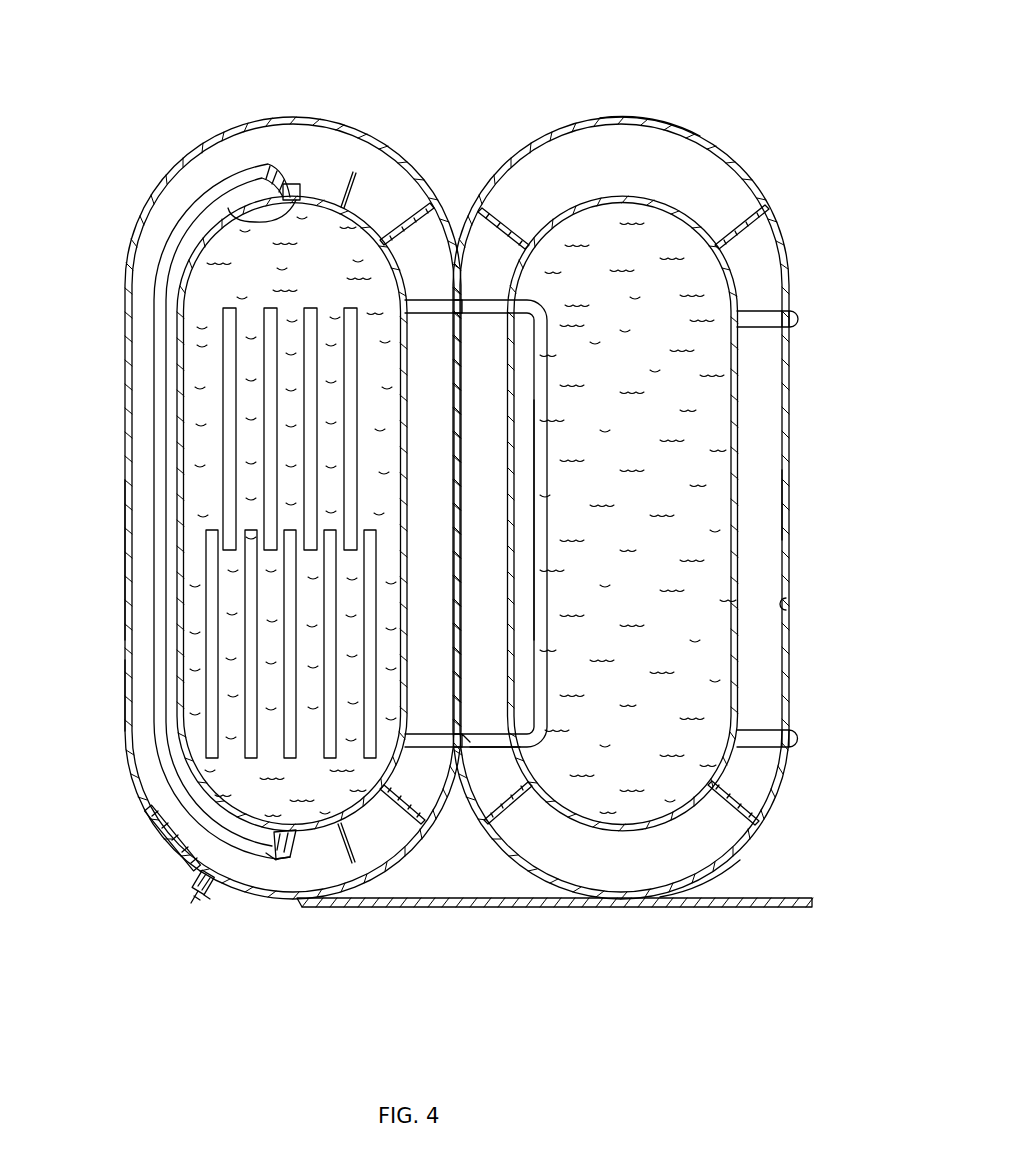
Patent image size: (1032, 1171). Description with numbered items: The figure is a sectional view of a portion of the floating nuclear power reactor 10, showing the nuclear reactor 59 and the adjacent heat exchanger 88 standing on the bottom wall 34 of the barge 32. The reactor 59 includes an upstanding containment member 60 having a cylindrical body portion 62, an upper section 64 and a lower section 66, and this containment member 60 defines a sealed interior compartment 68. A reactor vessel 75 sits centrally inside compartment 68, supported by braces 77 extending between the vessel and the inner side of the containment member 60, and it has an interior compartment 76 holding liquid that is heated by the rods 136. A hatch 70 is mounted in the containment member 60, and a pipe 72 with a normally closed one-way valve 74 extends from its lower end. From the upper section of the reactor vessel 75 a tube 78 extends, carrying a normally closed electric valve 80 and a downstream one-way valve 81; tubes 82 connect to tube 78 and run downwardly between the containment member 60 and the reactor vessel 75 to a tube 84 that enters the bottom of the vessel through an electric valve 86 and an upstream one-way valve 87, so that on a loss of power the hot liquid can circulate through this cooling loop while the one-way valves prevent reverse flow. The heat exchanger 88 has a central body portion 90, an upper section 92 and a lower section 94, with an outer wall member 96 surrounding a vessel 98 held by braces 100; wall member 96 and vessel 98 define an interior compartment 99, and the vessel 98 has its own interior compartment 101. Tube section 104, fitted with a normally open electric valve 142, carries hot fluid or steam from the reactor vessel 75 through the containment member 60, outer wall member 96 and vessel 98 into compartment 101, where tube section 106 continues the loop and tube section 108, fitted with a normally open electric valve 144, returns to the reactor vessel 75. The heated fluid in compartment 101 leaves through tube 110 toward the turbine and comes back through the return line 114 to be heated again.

The cryogenic storage system 10 is at (404, 92).
The barge 32 is at (778, 880).
The bottom wall 34 is at (516, 908).
The nuclear reactor 59 is at (108, 428).
The containment member 60 is at (338, 108).
The cylindrical body portion 62 is at (128, 565).
The upper section 64 is at (216, 141).
The lower section 66 is at (187, 878).
The interior compartment 68 is at (134, 718).
The hatch 70 is at (172, 836).
The pipe 72 is at (211, 895).
The one-way valve 74 is at (190, 893).
The reactor vessel 75 is at (366, 203).
The interior compartment 76 is at (238, 283).
The braces 77 is at (398, 808).
The tube 78 is at (227, 213).
The electric valve 80 is at (292, 200).
The one-way valve 81 is at (270, 165).
The tubes 82 is at (167, 213).
The tube 84 is at (291, 834).
The electric valve 86 is at (282, 848).
The one-way valve 87 is at (253, 851).
The heat exchanger 88 is at (775, 158).
The central body portion 90 is at (790, 548).
The upper section 92 is at (672, 115).
The lower section 94 is at (708, 868).
The outer wall member 96 is at (786, 604).
The vessel 98 is at (752, 402).
The interior compartment 99 is at (770, 512).
The braces 100 is at (740, 796).
The interior compartment 101 is at (668, 375).
The tube section 104 is at (490, 300).
The tube section 106 is at (542, 525).
The tube section 108 is at (527, 750).
The tube 110 is at (770, 313).
The return line 114 is at (766, 738).
The rods 136 is at (264, 493).
The electric open close valve 142 is at (463, 313).
The electric open close valve 144 is at (471, 748).